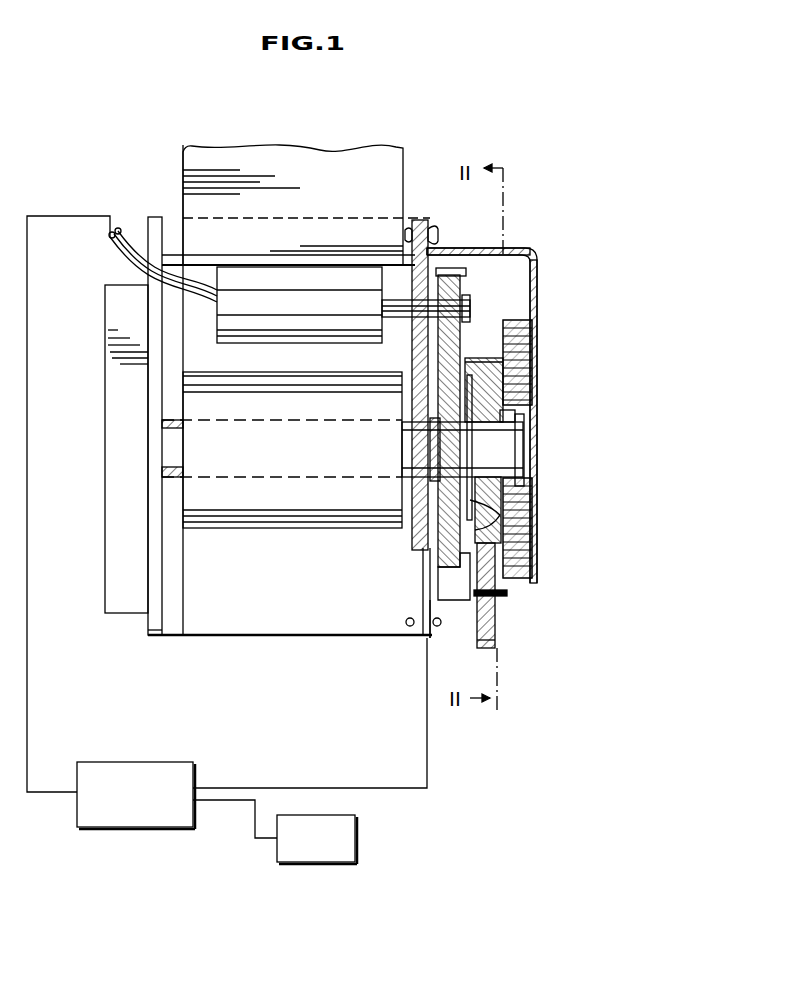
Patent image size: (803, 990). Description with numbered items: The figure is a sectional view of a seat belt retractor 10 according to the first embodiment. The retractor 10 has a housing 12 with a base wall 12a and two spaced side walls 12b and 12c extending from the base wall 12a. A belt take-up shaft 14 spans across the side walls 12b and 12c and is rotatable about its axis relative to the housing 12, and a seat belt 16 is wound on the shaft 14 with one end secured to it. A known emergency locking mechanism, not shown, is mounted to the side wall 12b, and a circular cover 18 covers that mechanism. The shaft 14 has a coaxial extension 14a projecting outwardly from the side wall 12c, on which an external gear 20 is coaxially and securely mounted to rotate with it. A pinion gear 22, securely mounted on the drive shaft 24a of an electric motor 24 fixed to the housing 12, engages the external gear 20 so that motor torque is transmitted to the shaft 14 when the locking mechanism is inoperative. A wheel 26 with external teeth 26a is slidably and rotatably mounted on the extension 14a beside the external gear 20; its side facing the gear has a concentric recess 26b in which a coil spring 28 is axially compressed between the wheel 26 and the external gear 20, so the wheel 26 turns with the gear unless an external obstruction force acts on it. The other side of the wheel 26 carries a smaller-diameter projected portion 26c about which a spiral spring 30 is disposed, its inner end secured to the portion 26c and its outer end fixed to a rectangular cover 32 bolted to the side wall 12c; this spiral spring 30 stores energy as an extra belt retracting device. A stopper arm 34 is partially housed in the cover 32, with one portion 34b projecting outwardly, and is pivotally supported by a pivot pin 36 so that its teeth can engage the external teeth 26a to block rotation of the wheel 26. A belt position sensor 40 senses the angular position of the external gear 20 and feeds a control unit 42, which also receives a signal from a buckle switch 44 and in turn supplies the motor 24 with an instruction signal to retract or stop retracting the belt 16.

The seat belt retractor 10 is at (280, 748).
The housing 12 is at (298, 640).
The base wall 12a is at (227, 625).
The side wall 12b is at (155, 222).
The side wall 12c is at (423, 222).
The belt take-up shaft 14 is at (284, 478).
The coaxial extension 14a is at (503, 438).
The seat belt 16 is at (376, 165).
The circular cover 18 is at (122, 615).
The external gear 20 is at (440, 548).
The pinion gear 22 is at (460, 272).
The electric motor 24 is at (312, 332).
The drive shaft 24a is at (432, 296).
The wheel 26 is at (490, 383).
The external teeth 26a is at (527, 342).
The concentric recess 26b is at (517, 508).
The projected portion 26c is at (500, 418).
The coil spring 28 is at (470, 493).
The spiral spring 30 is at (478, 518).
The rectangular cover 32 is at (537, 302).
The stopper arm 34 is at (507, 592).
The portion 34b is at (497, 643).
The pivot pin 36 is at (503, 597).
The belt position sensor 40 is at (430, 590).
The control unit 42 is at (130, 828).
The buckle switch 44 is at (335, 862).